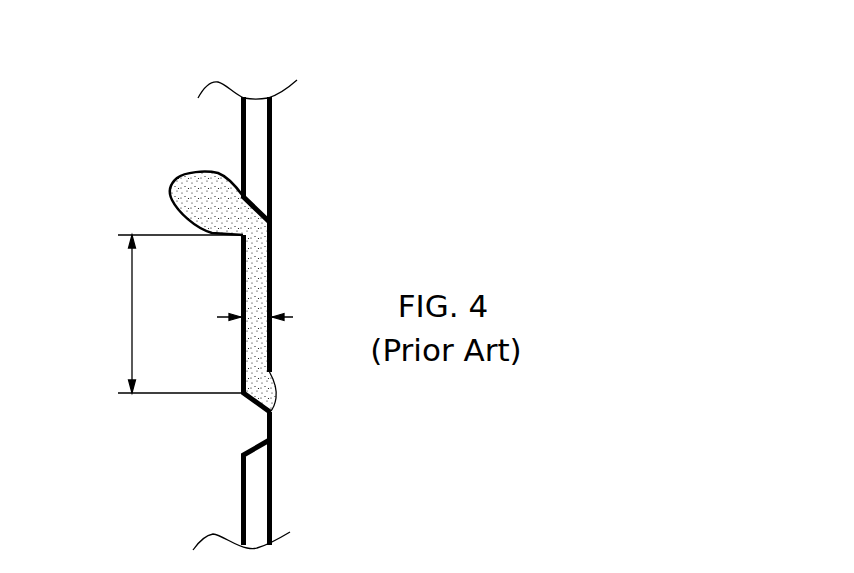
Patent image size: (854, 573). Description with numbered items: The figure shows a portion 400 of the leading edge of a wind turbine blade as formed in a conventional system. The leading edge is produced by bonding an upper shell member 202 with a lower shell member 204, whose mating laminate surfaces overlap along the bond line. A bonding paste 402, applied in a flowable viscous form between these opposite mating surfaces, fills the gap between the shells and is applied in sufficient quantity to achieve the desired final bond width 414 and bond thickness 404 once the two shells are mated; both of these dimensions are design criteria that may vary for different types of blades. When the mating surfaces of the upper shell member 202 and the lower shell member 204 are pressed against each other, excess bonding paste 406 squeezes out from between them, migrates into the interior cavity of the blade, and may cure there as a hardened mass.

The portion of the leading edge 400 is at (292, 287).
The upper shell member 202 is at (275, 142).
The lower shell member 204 is at (273, 473).
The bonding paste 402 is at (247, 282).
The bond thickness 404 is at (290, 317).
The excess bonding paste 406 is at (190, 172).
The bond width 414 is at (132, 312).